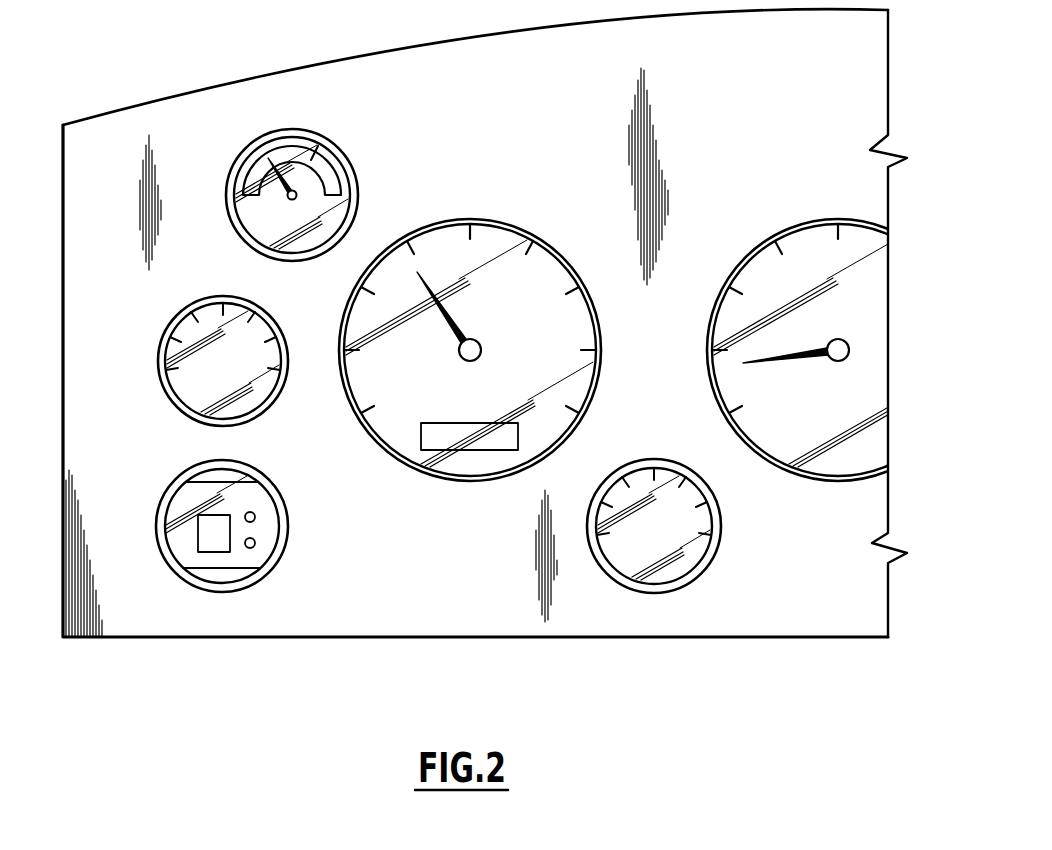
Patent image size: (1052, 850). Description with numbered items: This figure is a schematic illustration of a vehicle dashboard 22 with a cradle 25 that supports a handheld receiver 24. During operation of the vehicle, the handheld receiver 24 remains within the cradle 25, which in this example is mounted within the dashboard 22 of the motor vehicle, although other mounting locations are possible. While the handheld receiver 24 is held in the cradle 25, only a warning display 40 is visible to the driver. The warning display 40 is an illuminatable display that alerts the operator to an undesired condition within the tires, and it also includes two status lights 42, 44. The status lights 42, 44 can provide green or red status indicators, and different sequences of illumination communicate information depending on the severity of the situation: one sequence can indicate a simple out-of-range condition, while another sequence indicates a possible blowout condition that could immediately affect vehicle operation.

The dashboard 22 is at (750, 585).
The handheld receiver 24 is at (243, 558).
The cradle 25 is at (297, 576).
The warning display 40 is at (188, 562).
The status light 42 is at (272, 511).
The status light 44 is at (273, 539).